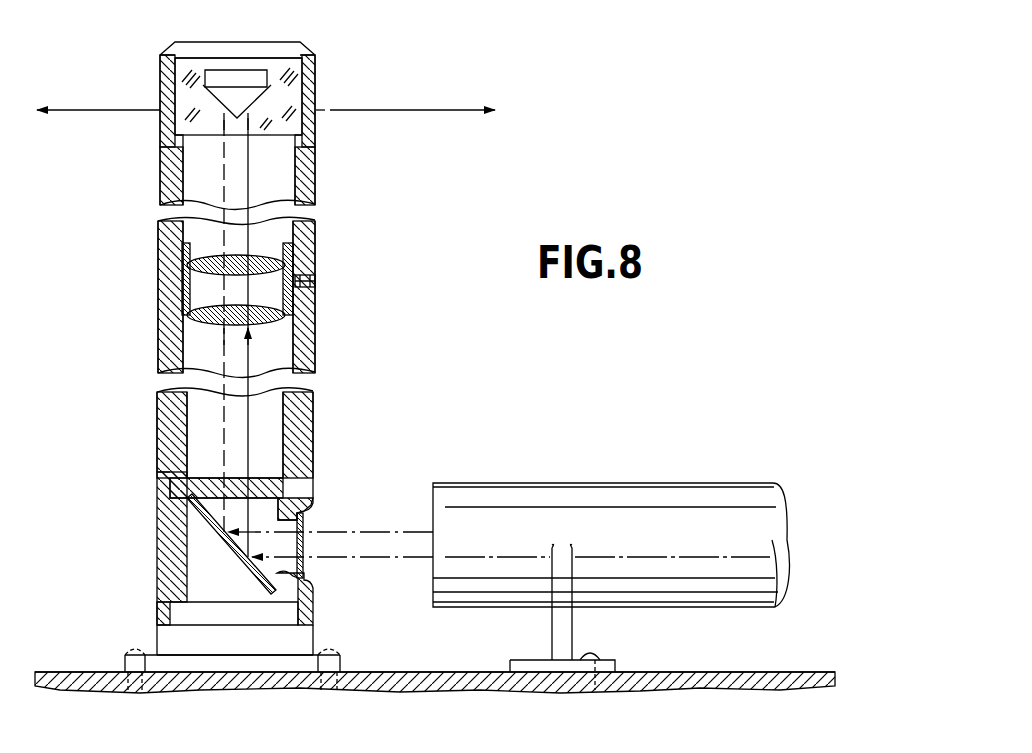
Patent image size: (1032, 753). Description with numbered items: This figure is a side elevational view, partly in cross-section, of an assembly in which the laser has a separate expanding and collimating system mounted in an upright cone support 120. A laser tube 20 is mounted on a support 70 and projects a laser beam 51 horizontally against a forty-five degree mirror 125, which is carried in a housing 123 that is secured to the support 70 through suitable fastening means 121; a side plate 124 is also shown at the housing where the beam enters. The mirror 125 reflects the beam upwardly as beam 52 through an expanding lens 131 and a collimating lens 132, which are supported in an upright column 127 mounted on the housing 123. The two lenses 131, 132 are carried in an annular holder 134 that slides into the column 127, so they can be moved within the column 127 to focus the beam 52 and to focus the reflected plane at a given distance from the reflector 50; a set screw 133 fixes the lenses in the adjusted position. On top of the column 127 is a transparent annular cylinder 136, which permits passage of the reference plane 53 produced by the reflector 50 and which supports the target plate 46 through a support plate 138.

The laser tube 20 is at (596, 478).
The target plate 46 is at (186, 62).
The reflector 50 is at (274, 97).
The laser beam 51 is at (388, 530).
The beam 52 is at (249, 176).
The reference plane 53 is at (449, 108).
The support 70 is at (716, 666).
The upright cone support 120 is at (328, 339).
The fastening means 121 is at (341, 661).
The housing 123 is at (165, 560).
The side plate 124 is at (305, 519).
The mirror 125 is at (233, 548).
The upright column 127 is at (305, 425).
The expanding lens 131 is at (274, 310).
The collimating lens 132 is at (263, 256).
The set screw 133 is at (312, 281).
The annular holder 134 is at (183, 291).
The transparent annular cylinder 136 is at (310, 124).
The support plate 138 is at (305, 50).